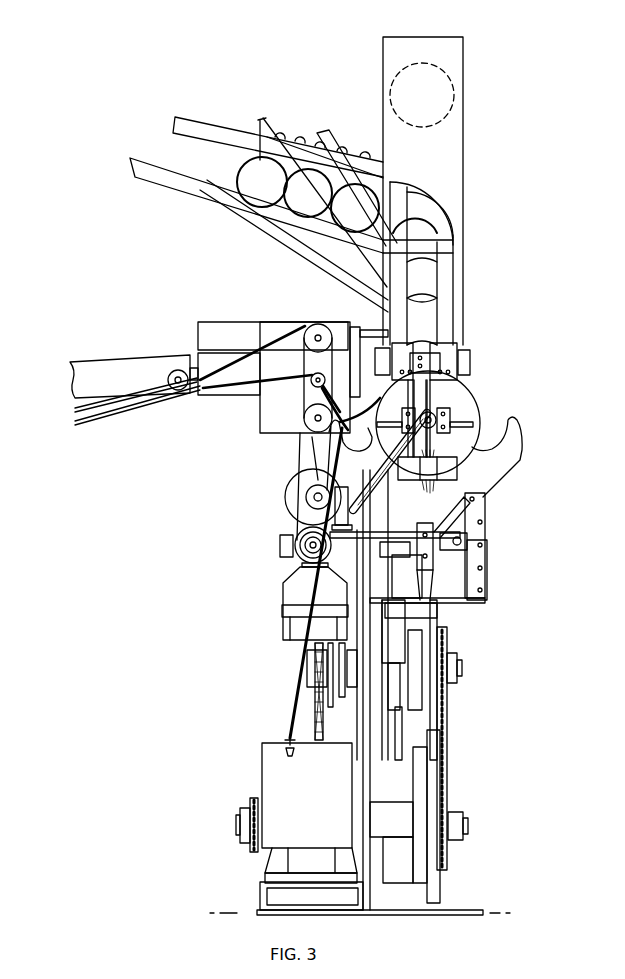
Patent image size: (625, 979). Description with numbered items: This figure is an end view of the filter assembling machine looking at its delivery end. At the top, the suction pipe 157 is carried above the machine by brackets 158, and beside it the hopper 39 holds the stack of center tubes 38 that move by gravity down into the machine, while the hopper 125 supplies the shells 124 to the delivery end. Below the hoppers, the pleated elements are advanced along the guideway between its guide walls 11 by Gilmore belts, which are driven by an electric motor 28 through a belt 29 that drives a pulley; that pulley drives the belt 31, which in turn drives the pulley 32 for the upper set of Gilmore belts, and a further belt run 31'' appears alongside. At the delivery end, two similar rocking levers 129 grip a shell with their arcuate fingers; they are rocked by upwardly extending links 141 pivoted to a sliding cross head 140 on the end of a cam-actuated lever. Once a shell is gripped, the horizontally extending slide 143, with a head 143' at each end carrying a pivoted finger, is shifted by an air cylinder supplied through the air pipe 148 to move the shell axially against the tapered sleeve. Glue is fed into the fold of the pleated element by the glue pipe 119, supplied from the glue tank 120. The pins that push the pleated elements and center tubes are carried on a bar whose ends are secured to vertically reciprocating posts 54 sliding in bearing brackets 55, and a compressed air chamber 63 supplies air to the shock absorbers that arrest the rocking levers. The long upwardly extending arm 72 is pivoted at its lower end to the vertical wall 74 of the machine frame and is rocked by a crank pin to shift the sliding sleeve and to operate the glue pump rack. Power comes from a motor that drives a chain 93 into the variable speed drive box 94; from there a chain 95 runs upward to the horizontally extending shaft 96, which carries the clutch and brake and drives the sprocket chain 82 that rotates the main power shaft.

The guide walls 11 is at (122, 340).
The electric motor 28 is at (286, 497).
The belt 29 is at (300, 455).
The belt 31 is at (290, 380).
The belt strands 31'' is at (137, 406).
The pulley 32 is at (328, 307).
The center tubes 38 is at (343, 148).
The hopper 39 is at (210, 125).
The reciprocating posts 54 is at (393, 682).
The bearing brackets 55 is at (397, 618).
The compressed air chamber 63 is at (298, 590).
The upwardly extending arm 72 is at (428, 790).
The vertical wall 74 is at (367, 715).
The sprocket chain 82 is at (318, 713).
The chain 93 is at (253, 797).
The variable speed drive box 94 is at (280, 865).
The chain 95 is at (440, 740).
The horizontally extending shaft 96 is at (462, 667).
The glue pipe 119 is at (307, 657).
The glue tank 120 is at (292, 777).
The shells 124 is at (262, 112).
The hopper 125 is at (217, 193).
The rocking levers 129 is at (512, 466).
The sliding cross head 140 is at (470, 547).
The links 141 is at (470, 510).
The slide 143 is at (473, 418).
The head 143' is at (488, 414).
The air pipe 148 is at (376, 451).
The suction pipe 157 is at (422, 95).
The brackets 158 is at (452, 77).